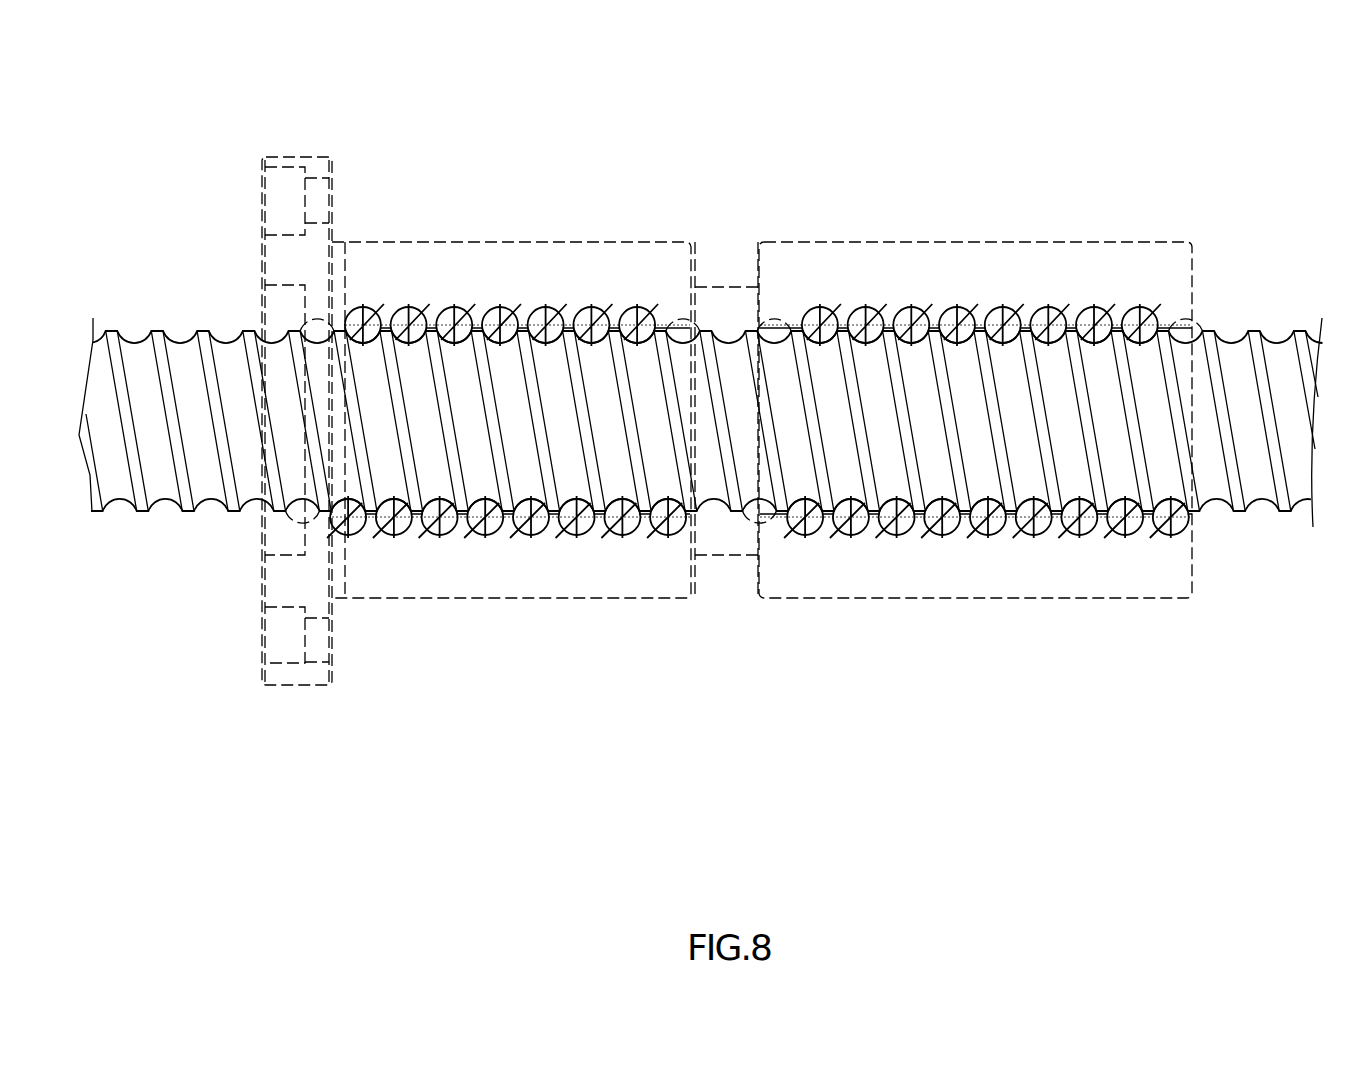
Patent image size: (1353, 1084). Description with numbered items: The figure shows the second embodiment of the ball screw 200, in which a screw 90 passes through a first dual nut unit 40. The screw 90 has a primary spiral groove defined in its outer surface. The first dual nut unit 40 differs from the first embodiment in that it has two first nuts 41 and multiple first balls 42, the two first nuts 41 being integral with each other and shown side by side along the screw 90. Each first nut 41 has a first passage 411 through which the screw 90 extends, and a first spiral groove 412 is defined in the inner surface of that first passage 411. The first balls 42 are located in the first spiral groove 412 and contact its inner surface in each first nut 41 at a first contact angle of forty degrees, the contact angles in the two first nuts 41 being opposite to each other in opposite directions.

The ball screw 200 is at (1243, 117).
The screw 90 is at (166, 480).
The first dual nut unit 40 is at (468, 775).
The first nut 41 is at (494, 600).
The first ball 42 is at (492, 308).
The first passage 411 is at (576, 308).
The first spiral groove 412 is at (618, 305).